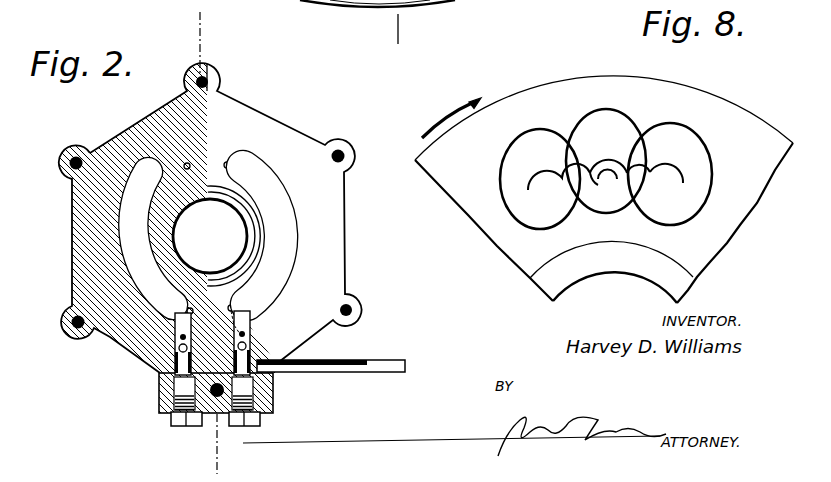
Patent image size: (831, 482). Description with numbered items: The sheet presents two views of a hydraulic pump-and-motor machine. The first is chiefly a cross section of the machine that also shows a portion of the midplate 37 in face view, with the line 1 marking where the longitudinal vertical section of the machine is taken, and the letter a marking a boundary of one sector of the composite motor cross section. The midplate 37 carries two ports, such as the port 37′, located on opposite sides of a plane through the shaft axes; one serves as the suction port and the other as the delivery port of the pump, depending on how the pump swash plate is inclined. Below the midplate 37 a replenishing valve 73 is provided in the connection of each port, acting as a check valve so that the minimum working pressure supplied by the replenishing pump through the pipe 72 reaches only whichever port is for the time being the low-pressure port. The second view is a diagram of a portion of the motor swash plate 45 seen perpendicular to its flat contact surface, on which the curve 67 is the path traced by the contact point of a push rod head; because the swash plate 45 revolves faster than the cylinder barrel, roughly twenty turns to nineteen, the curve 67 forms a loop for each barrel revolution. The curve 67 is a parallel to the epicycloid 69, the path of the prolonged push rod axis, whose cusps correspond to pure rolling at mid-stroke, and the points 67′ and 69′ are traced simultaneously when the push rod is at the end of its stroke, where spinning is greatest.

In FIG. 2, the midplate 37 is at (251, 115).
In FIG. 2, the port 37′ is at (150, 214).
In FIG. 2, the replenishing valve 73 is at (246, 339).
In FIG. 2, the pipe 72 is at (384, 361).
In FIG. 2, the section line 1 is at (195, 43).
In FIG. 2, the sector line a is at (391, 31).
In FIG. 8, the motor swash plate 45 is at (451, 133).
In FIG. 8, the curve 67 is at (721, 133).
In FIG. 8, the point 67′ is at (607, 214).
In FIG. 8, the epicycloid 69 is at (684, 183).
In FIG. 8, the point 69′ is at (630, 153).